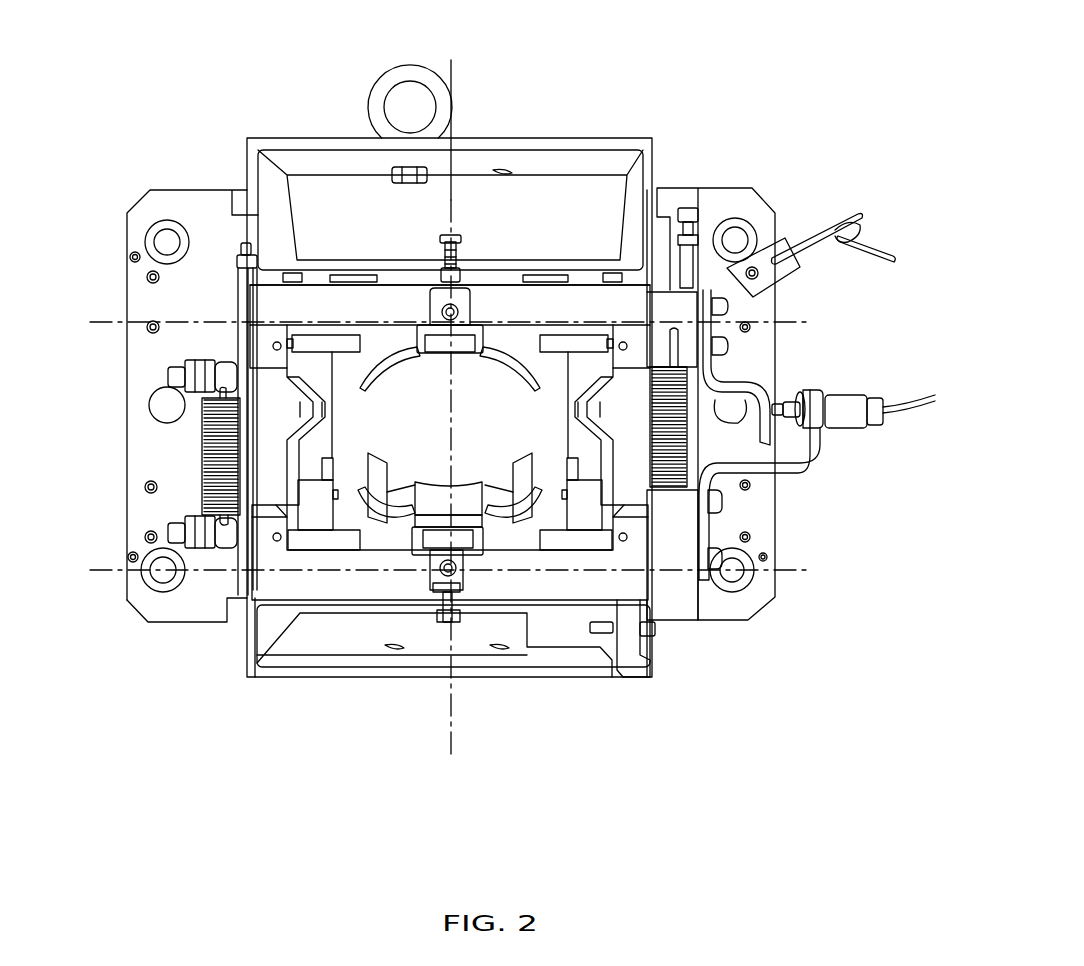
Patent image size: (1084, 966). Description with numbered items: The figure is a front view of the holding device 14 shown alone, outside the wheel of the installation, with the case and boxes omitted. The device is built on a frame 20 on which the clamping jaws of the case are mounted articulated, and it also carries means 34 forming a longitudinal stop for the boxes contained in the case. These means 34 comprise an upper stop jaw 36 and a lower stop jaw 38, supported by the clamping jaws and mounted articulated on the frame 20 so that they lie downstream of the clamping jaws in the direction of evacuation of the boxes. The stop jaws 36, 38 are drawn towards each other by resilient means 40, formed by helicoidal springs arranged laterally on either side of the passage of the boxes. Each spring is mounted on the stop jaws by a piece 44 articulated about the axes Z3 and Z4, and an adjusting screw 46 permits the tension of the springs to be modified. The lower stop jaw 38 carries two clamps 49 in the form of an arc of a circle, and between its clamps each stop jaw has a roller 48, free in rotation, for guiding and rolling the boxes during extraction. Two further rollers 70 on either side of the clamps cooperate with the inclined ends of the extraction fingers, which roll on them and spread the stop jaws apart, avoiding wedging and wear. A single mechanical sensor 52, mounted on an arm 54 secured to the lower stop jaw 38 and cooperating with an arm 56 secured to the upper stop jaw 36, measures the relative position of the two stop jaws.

The holding device 14 is at (303, 118).
The frame 20 is at (660, 152).
The means forming a longitudinal stop 34 is at (524, 222).
The upper stop jaw 36 is at (511, 305).
The lower stop jaw 38 is at (522, 582).
The resilient means 40 is at (200, 490).
The piece 44 is at (690, 325).
The adjusting screw 46 is at (245, 243).
The roller 48 is at (445, 340).
The clamps 49 is at (388, 528).
The sensor 52 is at (850, 390).
The arm 54 is at (752, 478).
The arm 56 is at (703, 233).
The rollers 70 is at (333, 342).
The axis Z3 is at (793, 583).
The axis Z4 is at (103, 340).